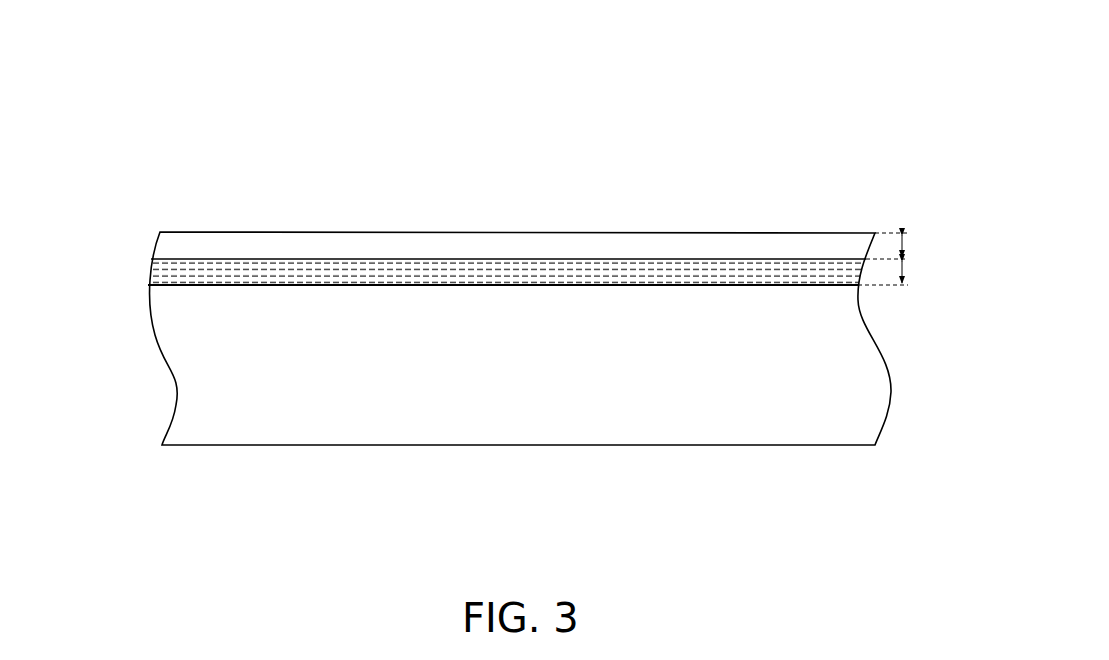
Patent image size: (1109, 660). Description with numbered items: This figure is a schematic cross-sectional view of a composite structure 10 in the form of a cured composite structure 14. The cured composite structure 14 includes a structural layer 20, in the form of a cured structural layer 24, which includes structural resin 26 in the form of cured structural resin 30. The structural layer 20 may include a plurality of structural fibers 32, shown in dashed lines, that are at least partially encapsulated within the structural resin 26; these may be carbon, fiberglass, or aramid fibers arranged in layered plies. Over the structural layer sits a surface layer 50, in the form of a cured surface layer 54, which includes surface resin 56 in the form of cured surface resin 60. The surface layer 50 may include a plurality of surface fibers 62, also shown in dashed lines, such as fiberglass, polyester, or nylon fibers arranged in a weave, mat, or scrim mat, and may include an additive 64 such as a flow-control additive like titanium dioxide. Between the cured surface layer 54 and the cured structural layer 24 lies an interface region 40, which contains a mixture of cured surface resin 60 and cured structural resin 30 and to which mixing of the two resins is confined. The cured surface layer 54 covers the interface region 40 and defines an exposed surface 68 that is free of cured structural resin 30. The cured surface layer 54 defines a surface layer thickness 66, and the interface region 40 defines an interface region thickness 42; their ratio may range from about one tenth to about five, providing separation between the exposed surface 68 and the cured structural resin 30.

The composite structure 10 is at (127, 75).
The cured composite structure 14 is at (148, 120).
The structural layer 20 is at (170, 412).
The cured structural layer 24 is at (165, 427).
The structural resin 26 is at (195, 352).
The cured structural resin 30 is at (193, 380).
The structural fibers 32 is at (143, 322).
The interface region 40 is at (150, 266).
The interface region thickness 42 is at (905, 272).
The surface layer 50 is at (157, 236).
The cured surface layer 54 is at (153, 248).
The surface resin 56 is at (222, 248).
The cured surface resin 60 is at (303, 247).
The surface fibers 62 is at (378, 247).
The additive 64 is at (463, 247).
The surface layer thickness 66 is at (905, 247).
The exposed surface 68 is at (757, 233).